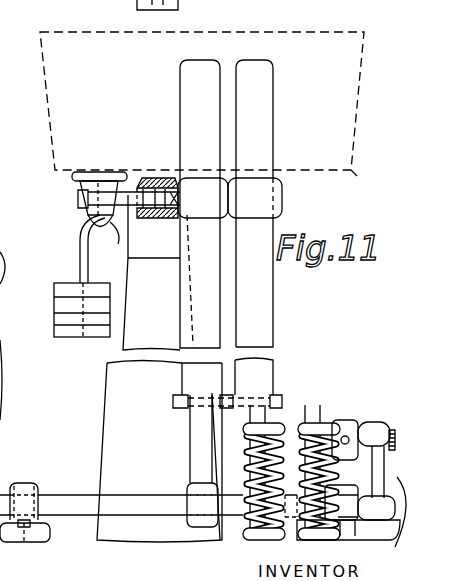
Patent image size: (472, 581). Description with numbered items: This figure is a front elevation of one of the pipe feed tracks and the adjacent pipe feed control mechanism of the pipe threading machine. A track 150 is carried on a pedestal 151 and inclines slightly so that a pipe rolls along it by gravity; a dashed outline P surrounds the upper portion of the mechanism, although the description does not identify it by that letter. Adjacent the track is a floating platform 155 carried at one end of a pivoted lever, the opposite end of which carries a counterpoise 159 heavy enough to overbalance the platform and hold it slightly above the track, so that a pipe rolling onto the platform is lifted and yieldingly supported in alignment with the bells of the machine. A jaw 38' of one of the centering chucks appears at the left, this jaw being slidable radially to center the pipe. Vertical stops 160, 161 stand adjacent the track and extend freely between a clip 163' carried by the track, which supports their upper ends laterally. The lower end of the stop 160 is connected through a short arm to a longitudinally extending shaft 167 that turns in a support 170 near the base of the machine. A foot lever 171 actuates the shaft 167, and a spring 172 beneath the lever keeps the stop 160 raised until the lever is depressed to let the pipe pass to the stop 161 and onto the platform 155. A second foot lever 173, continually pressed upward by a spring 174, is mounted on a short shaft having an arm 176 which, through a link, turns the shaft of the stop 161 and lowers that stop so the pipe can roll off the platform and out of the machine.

The dashed outline region P is at (312, 33).
The jaw 38' is at (19, 333).
The track 150 is at (158, 178).
The pedestal 151 is at (106, 449).
The floating platform 155 is at (98, 175).
The counterpoise 159 is at (75, 332).
The stop 160 is at (181, 80).
The stop 161 is at (270, 83).
The clip 163' is at (256, 198).
The shaft 167 is at (66, 505).
The support 170 is at (27, 482).
The foot lever 171 is at (245, 432).
The spring 172 is at (278, 430).
The foot lever 173 is at (325, 440).
The spring 174 is at (315, 440).
The arm 176 is at (350, 564).